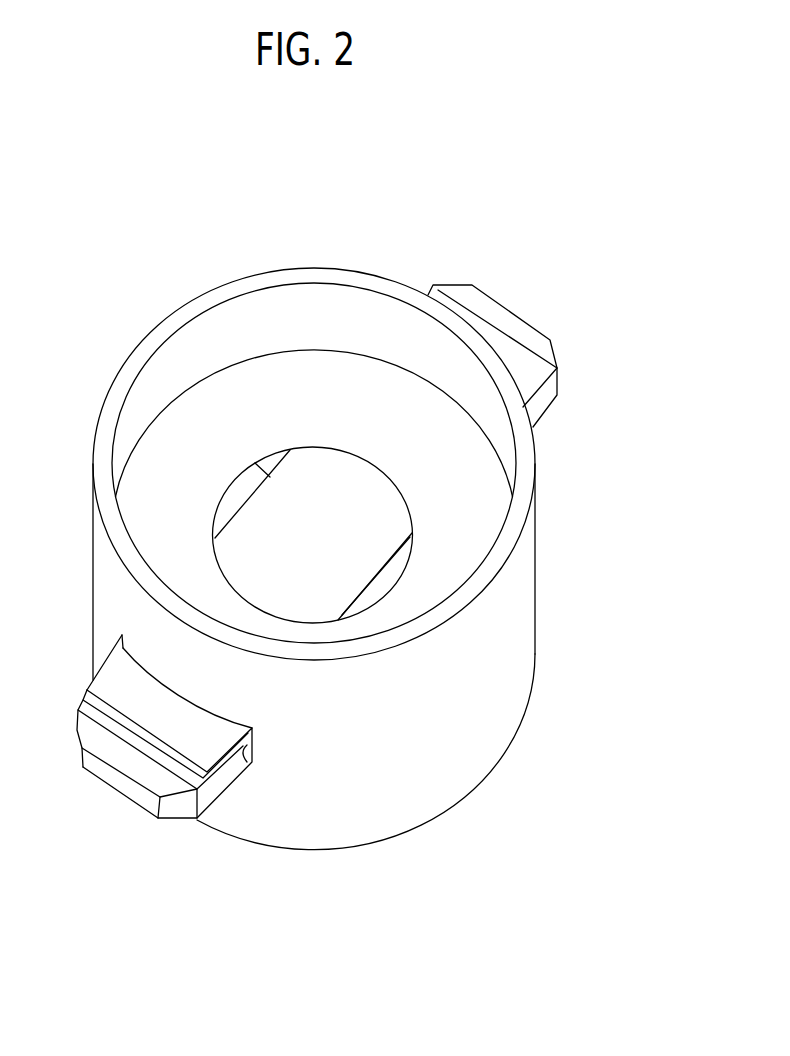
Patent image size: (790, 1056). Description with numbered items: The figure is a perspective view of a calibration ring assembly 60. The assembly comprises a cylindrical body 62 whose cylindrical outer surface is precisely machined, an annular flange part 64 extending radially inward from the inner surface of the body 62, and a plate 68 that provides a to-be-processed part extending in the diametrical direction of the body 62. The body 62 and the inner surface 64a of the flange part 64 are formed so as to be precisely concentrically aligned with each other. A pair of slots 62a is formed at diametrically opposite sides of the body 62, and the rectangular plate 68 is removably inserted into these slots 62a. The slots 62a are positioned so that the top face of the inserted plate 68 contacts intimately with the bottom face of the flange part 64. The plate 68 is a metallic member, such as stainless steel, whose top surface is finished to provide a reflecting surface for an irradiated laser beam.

The calibration ring assembly 60 is at (412, 248).
The cylindrical body 62 is at (480, 620).
The slots 62a is at (253, 765).
The annular flange part 64 is at (268, 393).
The inner surface of flange part 64a is at (278, 481).
The plate 68 is at (495, 342).